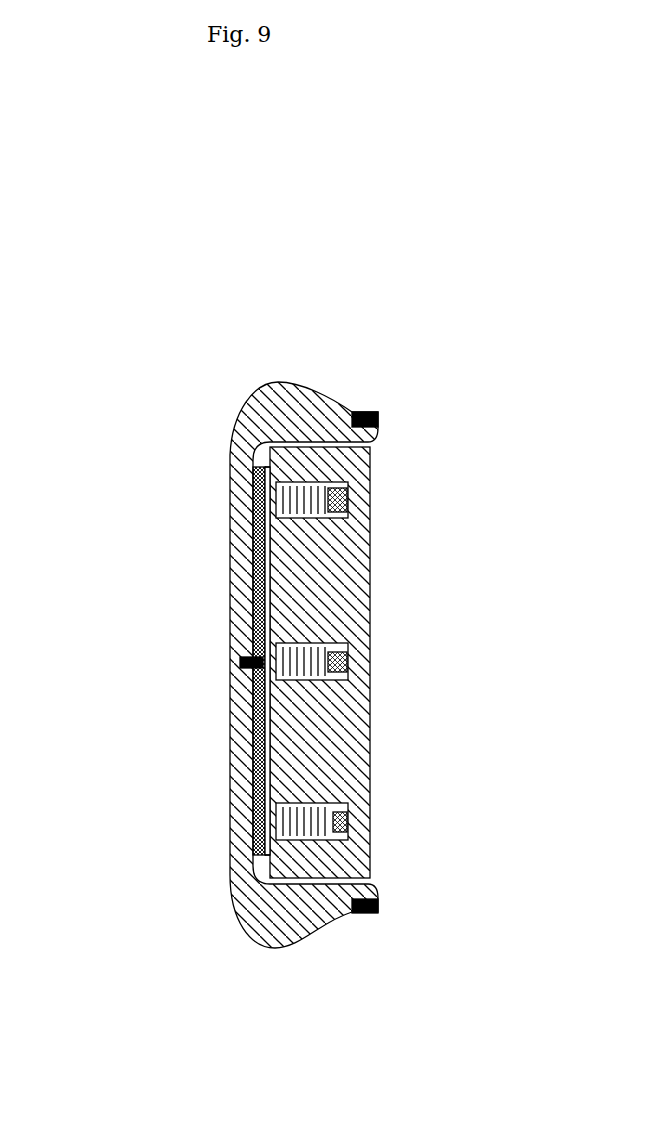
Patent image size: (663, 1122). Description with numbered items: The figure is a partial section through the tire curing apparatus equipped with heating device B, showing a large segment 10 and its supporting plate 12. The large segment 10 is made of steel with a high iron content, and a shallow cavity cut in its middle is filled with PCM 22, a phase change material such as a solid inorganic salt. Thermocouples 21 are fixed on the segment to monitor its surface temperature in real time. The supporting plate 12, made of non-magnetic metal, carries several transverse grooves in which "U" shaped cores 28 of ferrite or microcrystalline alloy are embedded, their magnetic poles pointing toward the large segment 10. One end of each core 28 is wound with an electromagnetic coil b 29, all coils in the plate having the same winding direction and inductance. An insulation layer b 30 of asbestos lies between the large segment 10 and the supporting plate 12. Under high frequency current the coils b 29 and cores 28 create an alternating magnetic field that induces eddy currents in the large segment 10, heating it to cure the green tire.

The large segment 10 is at (235, 458).
The supporting plate 12 is at (292, 450).
The thermocouple 21 is at (360, 412).
The PCM 22 is at (258, 716).
The "U" shaped core 28 is at (340, 497).
The electromagnetic coil b 29 is at (330, 657).
The insulation layer b 30 is at (258, 594).